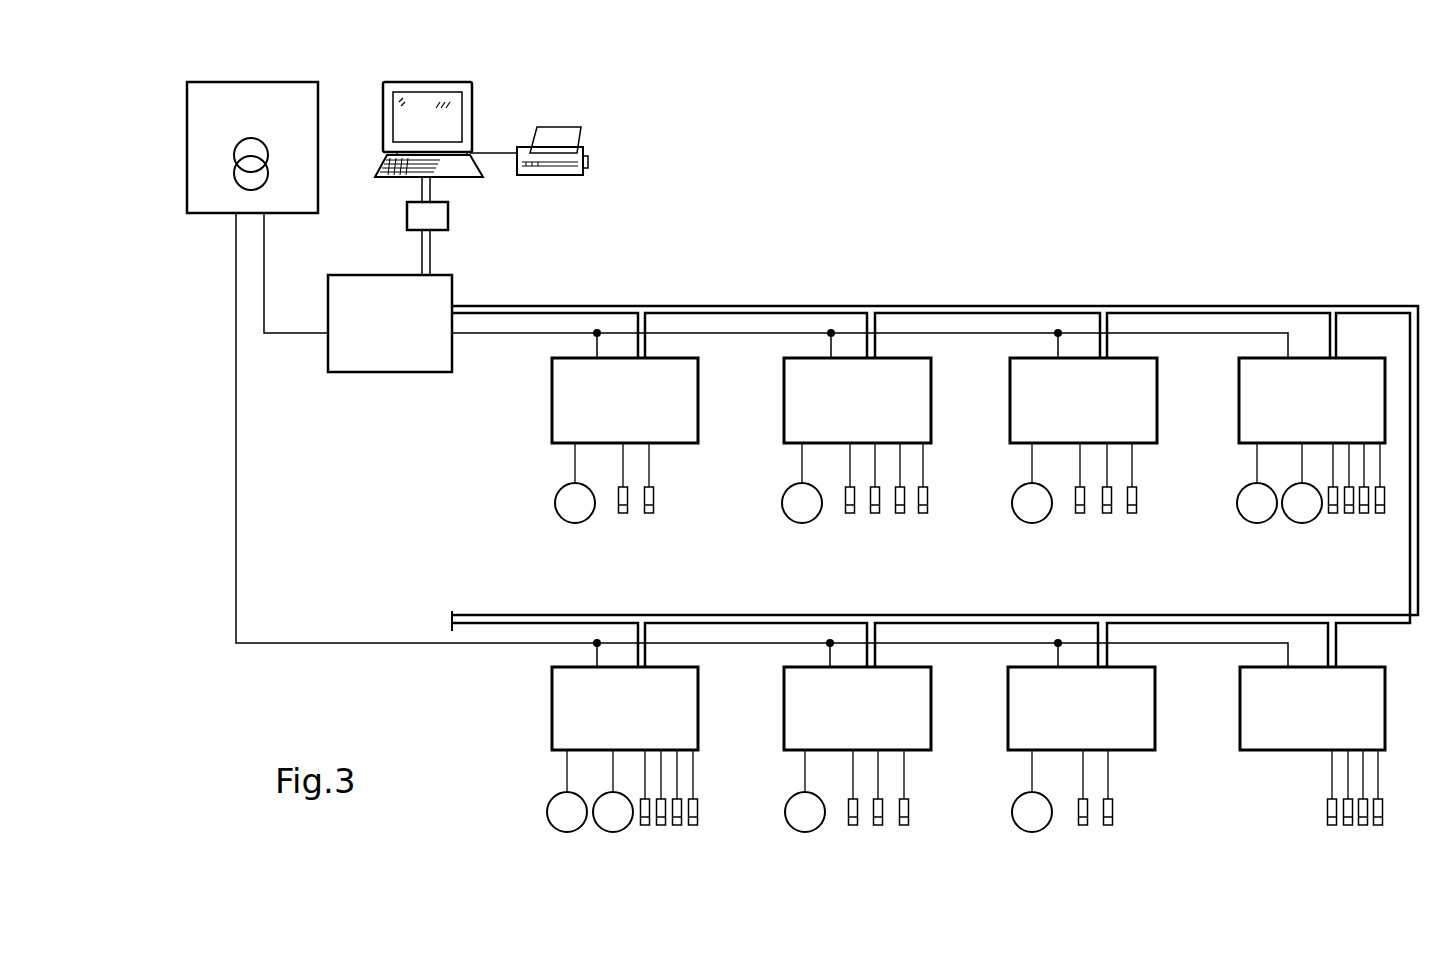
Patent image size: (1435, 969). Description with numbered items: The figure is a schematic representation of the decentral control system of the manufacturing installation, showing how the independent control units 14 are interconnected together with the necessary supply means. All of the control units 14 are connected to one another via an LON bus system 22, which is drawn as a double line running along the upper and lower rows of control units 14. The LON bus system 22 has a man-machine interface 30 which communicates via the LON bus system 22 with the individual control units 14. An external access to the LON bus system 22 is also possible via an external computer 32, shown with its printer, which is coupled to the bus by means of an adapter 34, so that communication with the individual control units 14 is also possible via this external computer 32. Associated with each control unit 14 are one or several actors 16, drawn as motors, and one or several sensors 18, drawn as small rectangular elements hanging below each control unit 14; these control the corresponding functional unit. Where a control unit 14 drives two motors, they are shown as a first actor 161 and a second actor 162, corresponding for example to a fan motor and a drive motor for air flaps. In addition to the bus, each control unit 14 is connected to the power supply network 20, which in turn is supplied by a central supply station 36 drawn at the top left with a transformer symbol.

The control unit 14 is at (1239, 420).
The actor 16 is at (575, 523).
The first actor 161 is at (567, 832).
The second actor 162 is at (622, 833).
The sensor 18 is at (623, 514).
The power supply network 20 is at (523, 333).
The LON bus system 22 is at (538, 306).
The man-machine interface 30 is at (452, 292).
The external computer 32 is at (422, 81).
The adapter 34 is at (438, 218).
The central supply station 36 is at (267, 93).